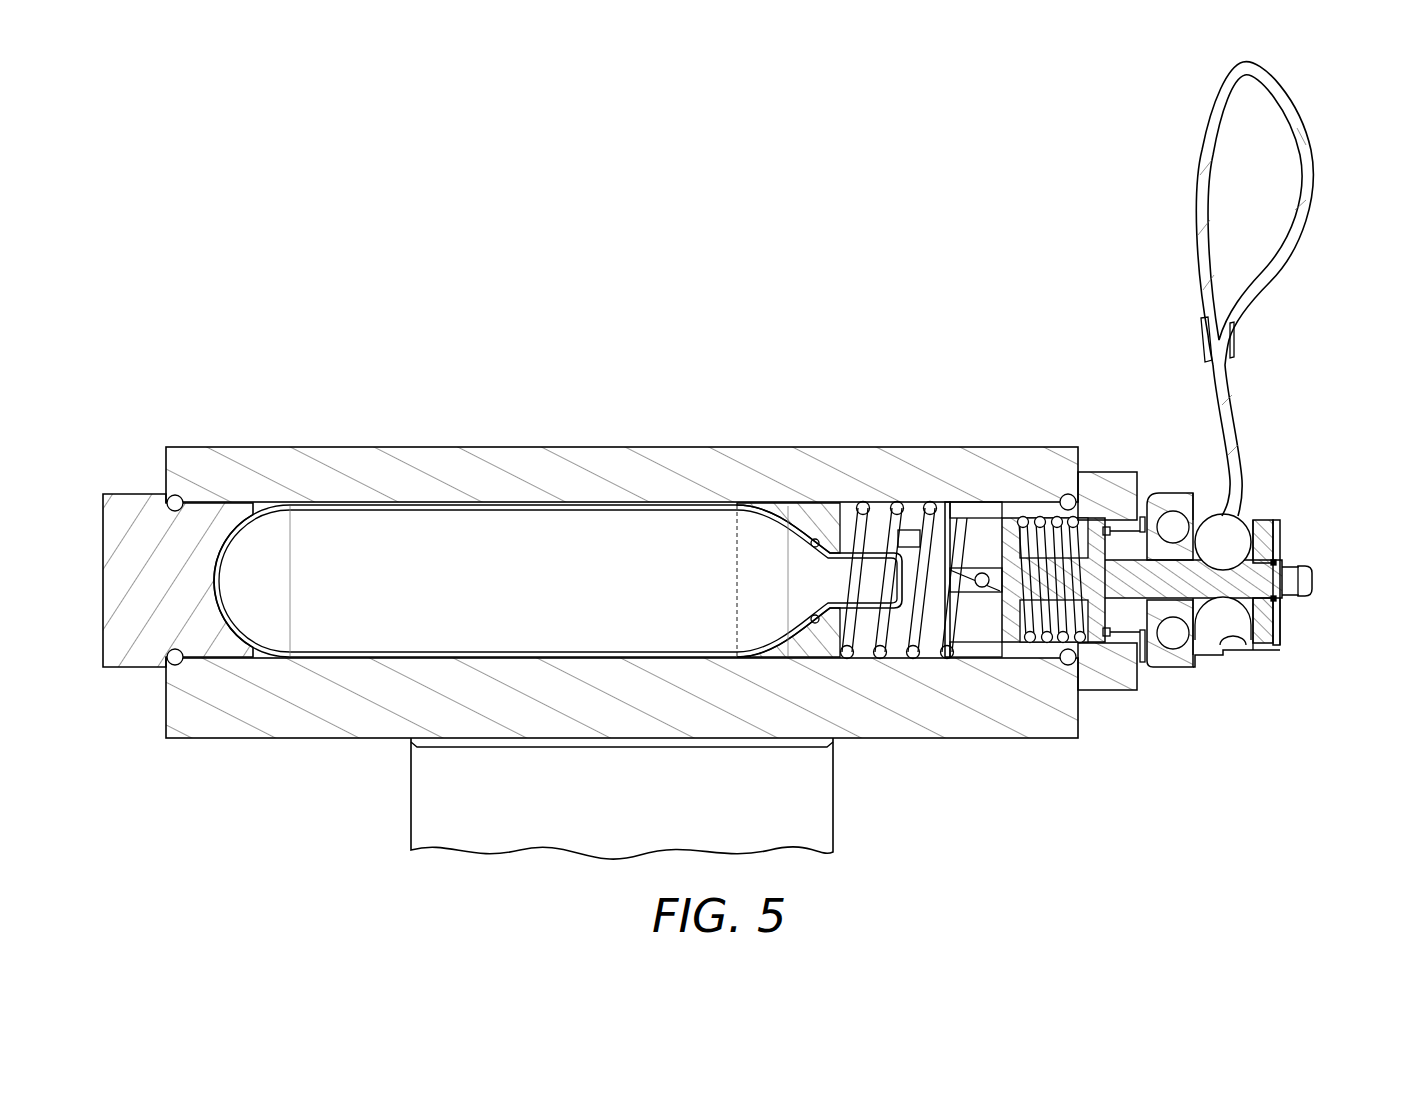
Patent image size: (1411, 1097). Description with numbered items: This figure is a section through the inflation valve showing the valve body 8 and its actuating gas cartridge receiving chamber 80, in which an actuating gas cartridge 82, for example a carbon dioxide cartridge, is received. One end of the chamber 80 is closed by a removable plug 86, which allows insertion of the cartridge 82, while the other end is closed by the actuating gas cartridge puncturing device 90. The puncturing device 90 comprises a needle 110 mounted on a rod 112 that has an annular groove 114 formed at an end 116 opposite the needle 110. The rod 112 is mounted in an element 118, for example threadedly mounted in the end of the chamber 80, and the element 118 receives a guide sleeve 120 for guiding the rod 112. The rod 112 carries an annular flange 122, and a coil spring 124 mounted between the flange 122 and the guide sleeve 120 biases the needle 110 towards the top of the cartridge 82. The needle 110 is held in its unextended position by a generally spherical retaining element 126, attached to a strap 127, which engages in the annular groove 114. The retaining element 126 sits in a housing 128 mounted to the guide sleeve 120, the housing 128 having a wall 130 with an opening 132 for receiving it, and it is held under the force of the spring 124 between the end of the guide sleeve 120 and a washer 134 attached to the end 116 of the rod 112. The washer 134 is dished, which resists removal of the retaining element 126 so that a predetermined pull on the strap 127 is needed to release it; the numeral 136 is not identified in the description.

The valve body 8 is at (930, 728).
The actuating gas cartridge receiving chamber 80 is at (307, 505).
The actuating gas cartridge 82 is at (400, 528).
The removable plug 86 is at (112, 520).
The actuating gas cartridge puncturing device 90 is at (1333, 364).
The needle 110 is at (963, 560).
The rod 112 is at (1133, 585).
The annular groove 114 is at (1272, 647).
The end 116 is at (1312, 578).
The element 118 is at (1117, 480).
The guide sleeve 120 is at (1160, 610).
The annular flange 122 is at (1003, 653).
The coil spring 124 is at (1032, 520).
The retaining element 126 is at (1237, 520).
The strap 127 is at (1312, 163).
The housing 128 is at (1178, 500).
The wall 130 is at (1210, 657).
The opening 132 is at (1262, 520).
The washer 134 is at (1267, 617).
The retaining plate 136 is at (1276, 558).